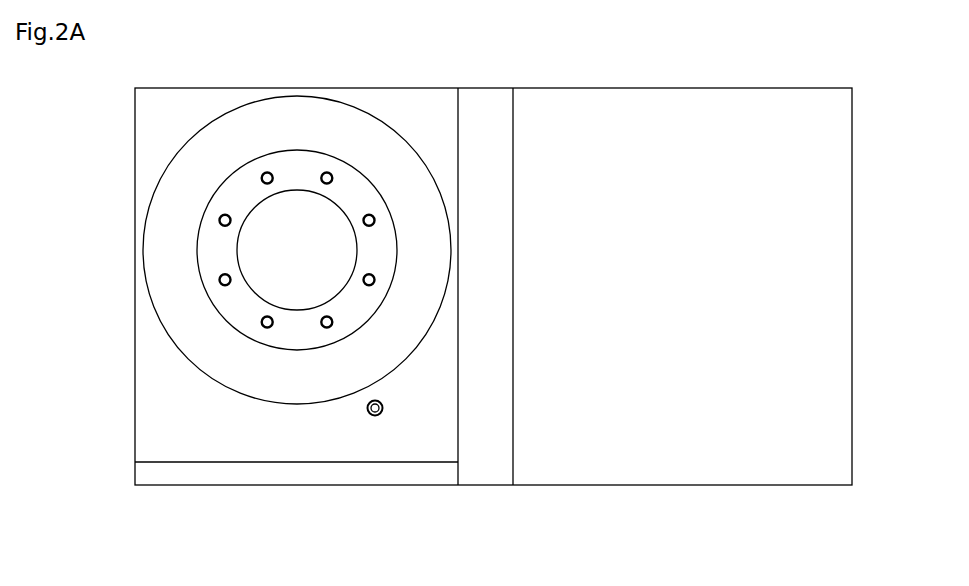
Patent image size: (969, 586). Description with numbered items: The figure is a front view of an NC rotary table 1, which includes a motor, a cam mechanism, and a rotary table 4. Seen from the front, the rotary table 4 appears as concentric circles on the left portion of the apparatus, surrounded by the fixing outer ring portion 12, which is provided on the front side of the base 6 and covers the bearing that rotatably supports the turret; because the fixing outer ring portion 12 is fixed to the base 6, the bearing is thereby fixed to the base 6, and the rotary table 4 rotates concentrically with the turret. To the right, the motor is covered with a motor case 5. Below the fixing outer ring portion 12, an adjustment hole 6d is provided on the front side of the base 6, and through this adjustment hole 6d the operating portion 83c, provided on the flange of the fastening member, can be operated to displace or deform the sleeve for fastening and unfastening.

The NC rotary table 1 is at (827, 58).
The rotary table 4 is at (240, 303).
The motor case 5 is at (838, 429).
The base 6 is at (407, 100).
The adjustment hole 6d is at (358, 412).
The fixing outer ring portion 12 is at (163, 240).
The operating portion 83c is at (377, 418).